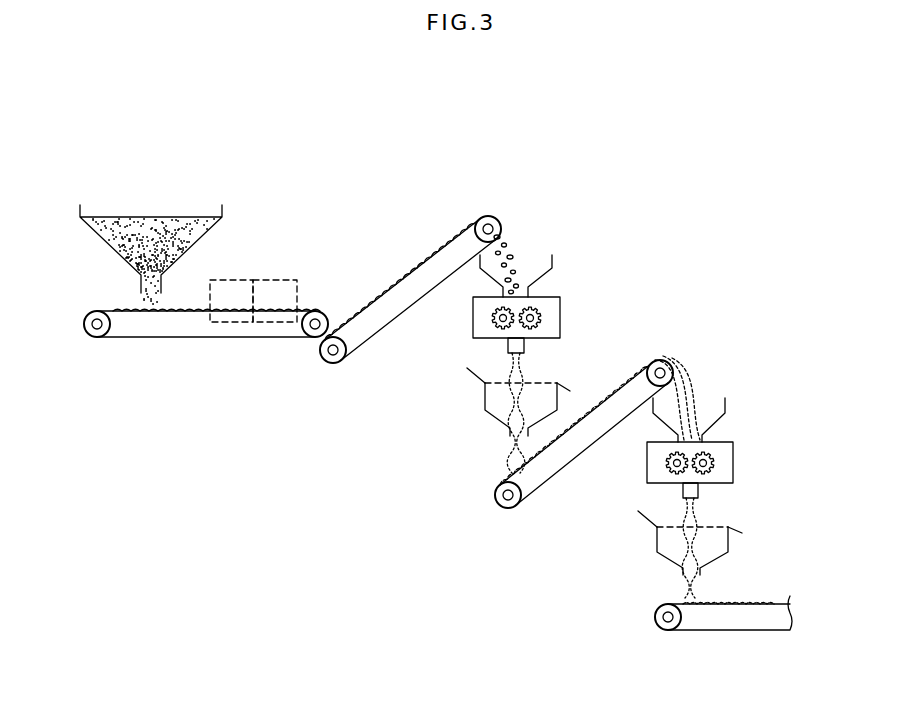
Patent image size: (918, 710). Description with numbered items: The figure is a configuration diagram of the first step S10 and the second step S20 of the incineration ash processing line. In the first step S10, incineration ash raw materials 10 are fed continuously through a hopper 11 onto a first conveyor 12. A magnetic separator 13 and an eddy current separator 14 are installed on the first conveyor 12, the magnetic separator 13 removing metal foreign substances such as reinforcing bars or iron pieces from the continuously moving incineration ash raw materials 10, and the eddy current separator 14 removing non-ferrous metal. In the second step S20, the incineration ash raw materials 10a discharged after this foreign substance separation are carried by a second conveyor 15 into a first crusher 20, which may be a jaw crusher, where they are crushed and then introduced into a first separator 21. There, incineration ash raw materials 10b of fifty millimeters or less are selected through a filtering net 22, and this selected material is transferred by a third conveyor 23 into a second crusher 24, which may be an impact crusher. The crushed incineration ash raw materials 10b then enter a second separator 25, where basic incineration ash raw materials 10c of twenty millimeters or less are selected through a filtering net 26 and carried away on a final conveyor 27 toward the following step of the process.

The first step S10 is at (248, 176).
The second step S20 is at (702, 281).
The incineration ash raw materials 10 is at (157, 223).
The incineration ash raw materials 10a is at (427, 258).
The incineration ash raw materials 10b is at (630, 377).
The basic incineration ash raw materials 10c is at (773, 593).
The hopper 11 is at (80, 205).
The first conveyor 12 is at (150, 328).
The magnetic separator 13 is at (223, 278).
The eddy current separator 14 is at (278, 278).
The second conveyor 15 is at (363, 335).
The first crusher 20 is at (553, 295).
The first separator 21 is at (490, 413).
The filtering net 22 is at (482, 395).
The third conveyor 23 is at (535, 478).
The second crusher 24 is at (727, 438).
The second separator 25 is at (663, 560).
The filtering net 26 is at (657, 535).
The output conveyor 27 is at (732, 620).